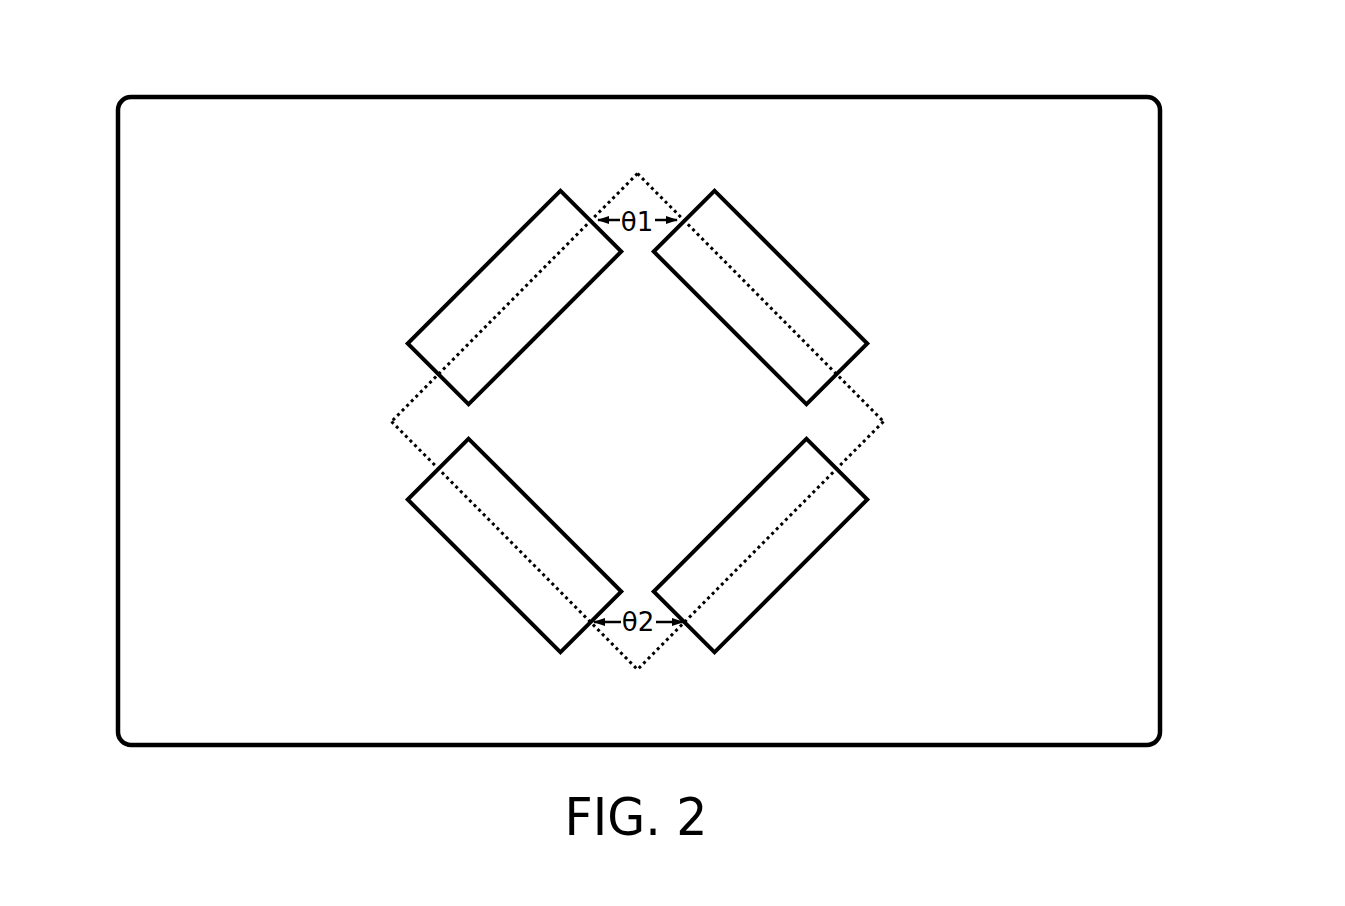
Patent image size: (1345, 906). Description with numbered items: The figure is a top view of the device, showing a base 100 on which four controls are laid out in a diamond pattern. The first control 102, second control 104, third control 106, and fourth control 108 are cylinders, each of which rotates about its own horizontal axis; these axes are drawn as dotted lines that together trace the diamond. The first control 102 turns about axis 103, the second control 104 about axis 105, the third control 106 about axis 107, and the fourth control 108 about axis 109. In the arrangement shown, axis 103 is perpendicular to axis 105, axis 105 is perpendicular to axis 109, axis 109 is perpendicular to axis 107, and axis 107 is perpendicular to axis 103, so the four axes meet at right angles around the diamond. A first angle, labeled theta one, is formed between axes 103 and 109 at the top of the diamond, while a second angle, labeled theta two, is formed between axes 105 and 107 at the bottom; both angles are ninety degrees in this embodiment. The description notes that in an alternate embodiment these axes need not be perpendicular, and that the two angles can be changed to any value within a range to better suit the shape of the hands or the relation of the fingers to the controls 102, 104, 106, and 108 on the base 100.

The base 100 is at (1162, 170).
The first control 102 is at (528, 600).
The second control 104 is at (768, 568).
The third control 106 is at (528, 240).
The fourth control 108 is at (725, 218).
The horizontal axis 103 is at (407, 437).
The horizontal axis 105 is at (872, 437).
The horizontal axis 107 is at (420, 392).
The horizontal axis 109 is at (853, 388).